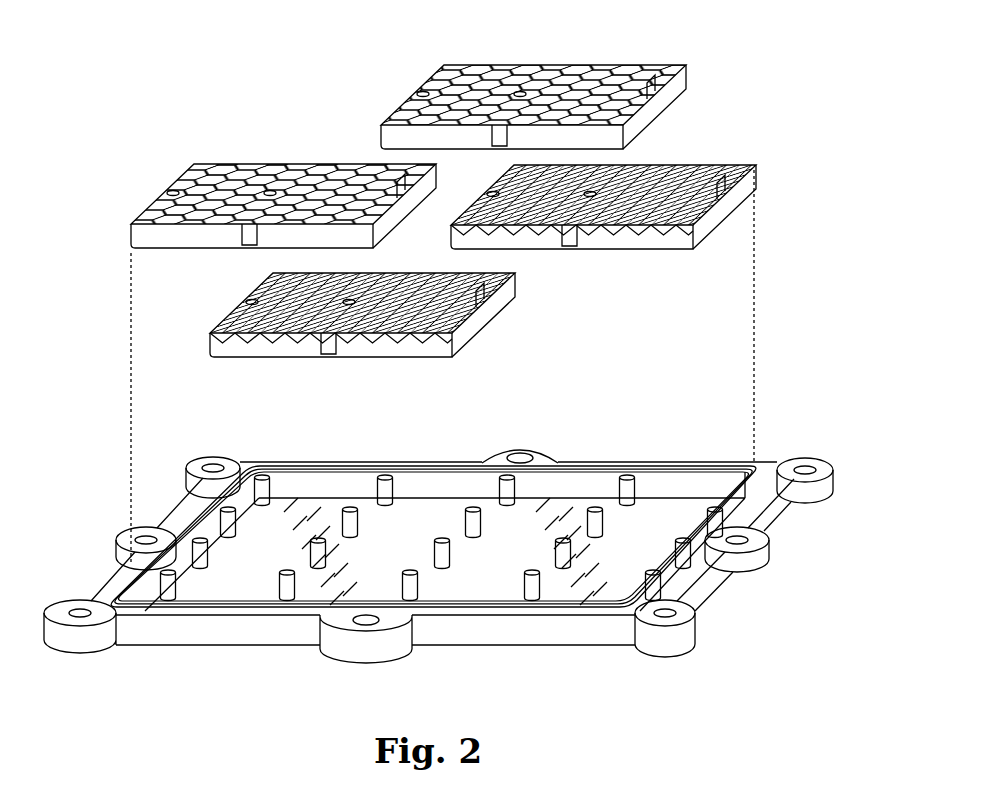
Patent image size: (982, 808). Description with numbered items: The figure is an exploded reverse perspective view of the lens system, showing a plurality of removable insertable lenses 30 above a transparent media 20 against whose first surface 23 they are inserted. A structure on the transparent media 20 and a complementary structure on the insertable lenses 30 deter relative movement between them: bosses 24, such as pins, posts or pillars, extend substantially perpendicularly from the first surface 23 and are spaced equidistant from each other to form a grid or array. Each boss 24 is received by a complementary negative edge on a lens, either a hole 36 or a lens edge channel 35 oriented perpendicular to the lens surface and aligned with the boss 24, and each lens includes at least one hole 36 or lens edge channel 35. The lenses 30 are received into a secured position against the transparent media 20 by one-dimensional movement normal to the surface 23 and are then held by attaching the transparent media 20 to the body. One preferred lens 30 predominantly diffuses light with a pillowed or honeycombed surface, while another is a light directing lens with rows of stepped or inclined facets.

The transparent media 20 is at (757, 573).
The first surface of the transparent media 23 is at (410, 512).
The boss 24 is at (517, 490).
The insertable lens 30 is at (117, 55).
The lens edge channel 35 is at (456, 66).
The hole 36 is at (522, 92).